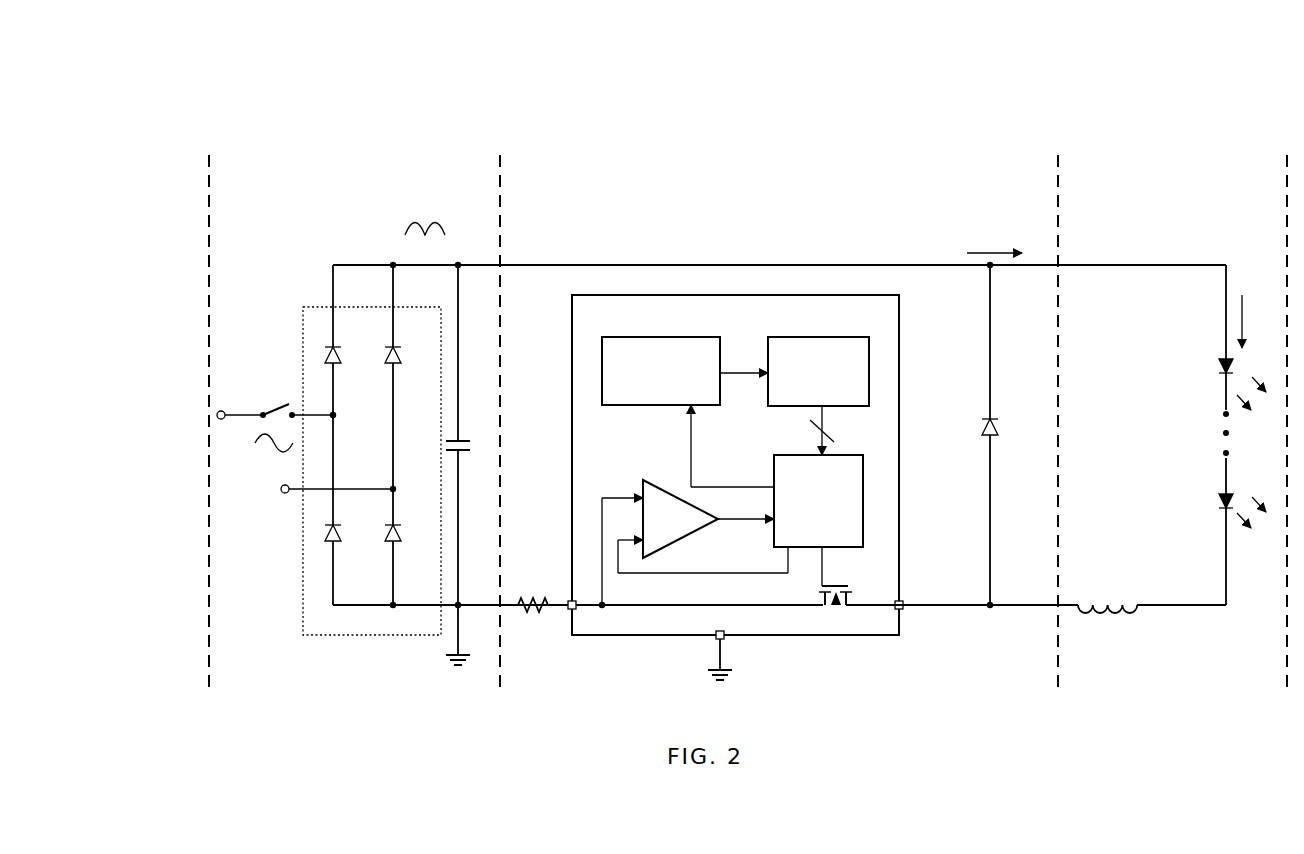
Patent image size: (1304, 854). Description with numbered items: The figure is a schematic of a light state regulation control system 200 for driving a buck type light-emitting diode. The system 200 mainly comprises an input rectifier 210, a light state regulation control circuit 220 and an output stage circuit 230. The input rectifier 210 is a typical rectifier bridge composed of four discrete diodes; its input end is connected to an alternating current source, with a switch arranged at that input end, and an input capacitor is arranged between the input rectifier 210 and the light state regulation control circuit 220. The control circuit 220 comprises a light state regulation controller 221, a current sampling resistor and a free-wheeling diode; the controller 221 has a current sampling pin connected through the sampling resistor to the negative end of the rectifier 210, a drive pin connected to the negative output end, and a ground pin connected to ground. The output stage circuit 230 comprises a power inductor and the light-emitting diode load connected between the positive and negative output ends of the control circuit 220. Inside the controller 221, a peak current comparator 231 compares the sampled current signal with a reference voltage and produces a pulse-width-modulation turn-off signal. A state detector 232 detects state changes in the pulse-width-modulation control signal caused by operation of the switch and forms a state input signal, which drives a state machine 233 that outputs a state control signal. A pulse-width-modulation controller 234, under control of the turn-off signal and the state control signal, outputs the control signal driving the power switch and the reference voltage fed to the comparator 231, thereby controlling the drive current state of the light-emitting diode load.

The light state regulation control system 200 is at (262, 87).
The input rectifier 210 is at (721, 422).
The light state regulation control circuit 220 is at (823, 429).
The light state regulation controller 221 is at (767, 454).
The output stage circuit 230 is at (1177, 394).
The peak current comparator 231 is at (698, 530).
The state detector 232 is at (645, 337).
The state machine 233 is at (869, 350).
The PWM controller 234 is at (863, 492).